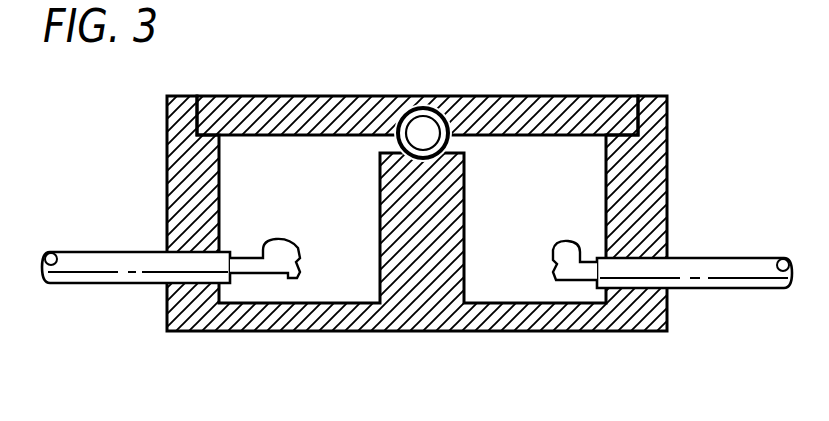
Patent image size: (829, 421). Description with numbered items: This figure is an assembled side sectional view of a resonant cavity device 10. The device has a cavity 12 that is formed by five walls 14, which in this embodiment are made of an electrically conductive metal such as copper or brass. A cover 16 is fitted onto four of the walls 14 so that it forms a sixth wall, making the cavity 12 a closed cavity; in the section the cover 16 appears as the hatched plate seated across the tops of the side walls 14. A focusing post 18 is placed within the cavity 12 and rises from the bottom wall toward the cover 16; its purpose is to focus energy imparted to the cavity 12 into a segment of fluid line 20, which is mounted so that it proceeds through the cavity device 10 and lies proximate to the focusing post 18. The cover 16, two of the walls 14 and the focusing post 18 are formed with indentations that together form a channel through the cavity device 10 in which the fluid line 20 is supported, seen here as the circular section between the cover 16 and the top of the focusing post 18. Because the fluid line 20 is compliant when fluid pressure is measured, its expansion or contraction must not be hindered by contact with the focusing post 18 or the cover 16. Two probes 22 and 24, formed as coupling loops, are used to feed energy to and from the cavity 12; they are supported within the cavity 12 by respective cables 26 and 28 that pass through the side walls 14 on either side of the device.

The resonant cavity device 10 is at (222, 364).
The cavity 12 is at (242, 174).
The walls 14 is at (652, 168).
The cover 16 is at (298, 96).
The focusing post 18 is at (466, 182).
The fluid line 20 is at (426, 108).
The probe 22 is at (284, 240).
The probe 24 is at (558, 241).
The cable 26 is at (105, 252).
The cable 28 is at (718, 258).